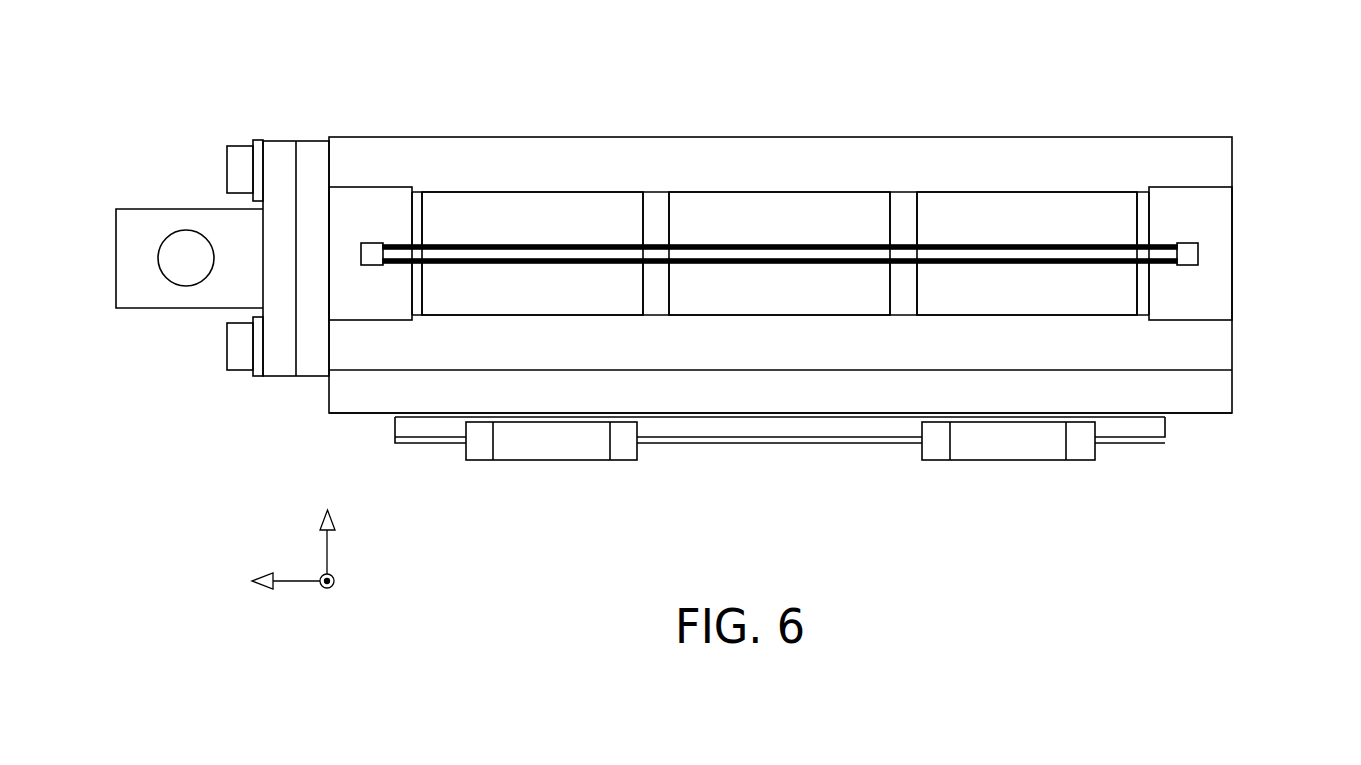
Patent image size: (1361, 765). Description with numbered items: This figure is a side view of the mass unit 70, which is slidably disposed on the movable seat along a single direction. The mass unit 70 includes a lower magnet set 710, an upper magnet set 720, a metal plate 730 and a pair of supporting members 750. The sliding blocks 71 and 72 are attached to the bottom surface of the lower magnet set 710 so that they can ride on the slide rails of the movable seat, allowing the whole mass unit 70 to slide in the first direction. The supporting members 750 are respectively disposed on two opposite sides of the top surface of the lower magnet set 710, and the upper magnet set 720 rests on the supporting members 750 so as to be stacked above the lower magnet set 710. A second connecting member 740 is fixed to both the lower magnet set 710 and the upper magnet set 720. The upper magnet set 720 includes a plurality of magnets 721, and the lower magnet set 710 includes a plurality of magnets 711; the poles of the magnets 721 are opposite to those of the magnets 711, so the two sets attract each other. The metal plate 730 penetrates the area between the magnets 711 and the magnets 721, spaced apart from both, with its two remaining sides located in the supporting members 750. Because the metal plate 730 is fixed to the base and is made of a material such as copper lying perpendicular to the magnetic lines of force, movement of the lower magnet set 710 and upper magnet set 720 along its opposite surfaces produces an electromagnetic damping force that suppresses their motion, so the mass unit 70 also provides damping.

The mass unit 70 is at (211, 62).
The sliding block 71 is at (552, 445).
The sliding block 72 is at (1008, 445).
The lower magnet set 710 is at (1233, 342).
The magnets 711 is at (497, 290).
The upper magnet set 720 is at (1233, 168).
The magnets 721 is at (529, 215).
The metal plate 730 is at (1163, 253).
The second connecting member 740 is at (169, 295).
The supporting members 750 is at (371, 212).